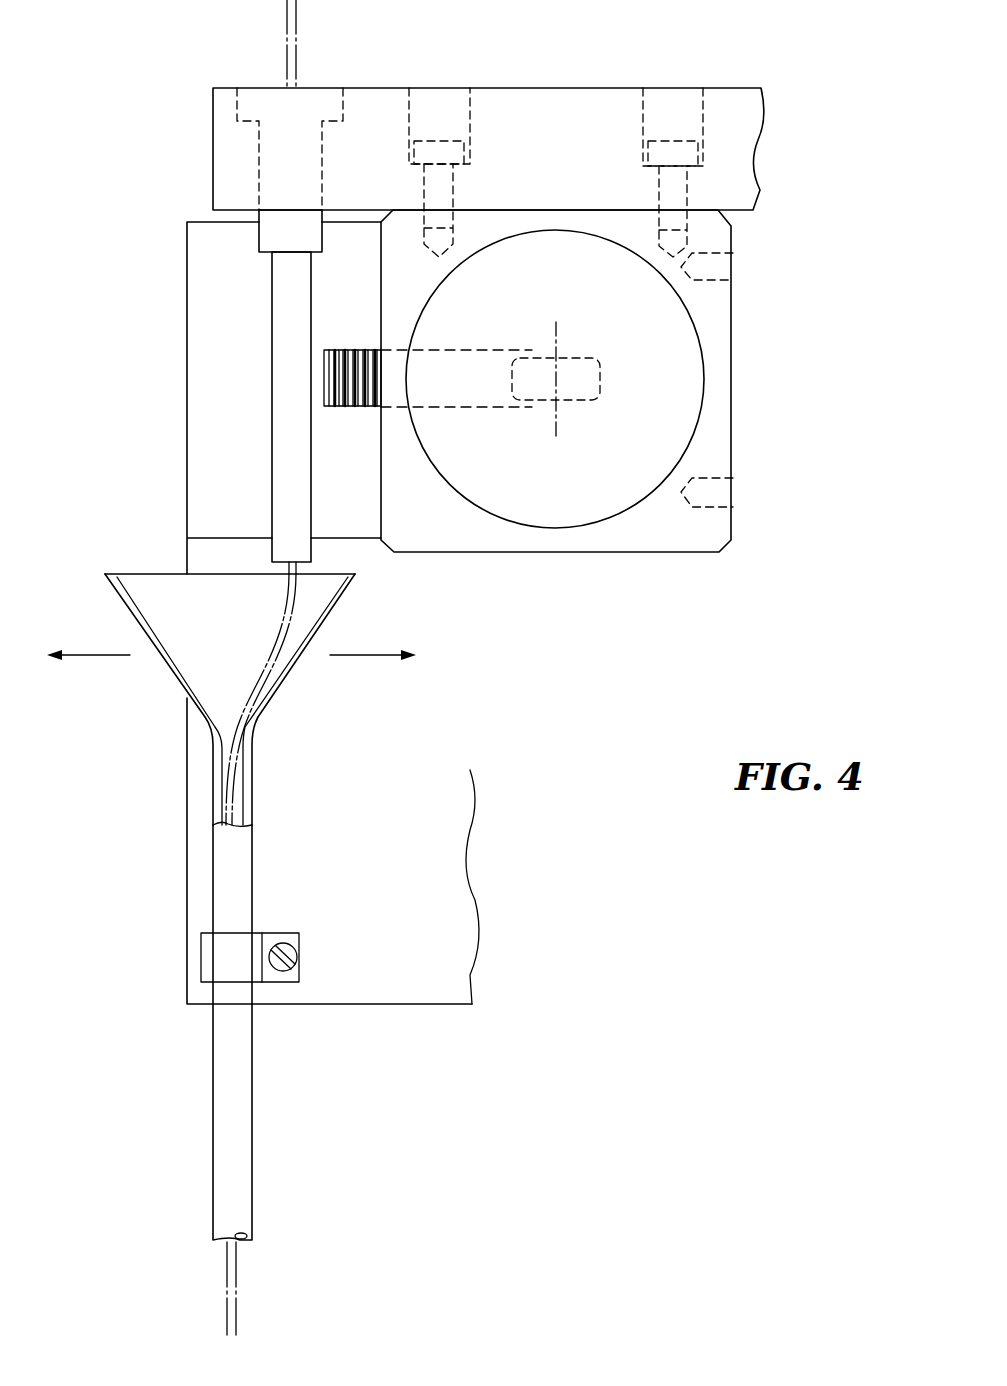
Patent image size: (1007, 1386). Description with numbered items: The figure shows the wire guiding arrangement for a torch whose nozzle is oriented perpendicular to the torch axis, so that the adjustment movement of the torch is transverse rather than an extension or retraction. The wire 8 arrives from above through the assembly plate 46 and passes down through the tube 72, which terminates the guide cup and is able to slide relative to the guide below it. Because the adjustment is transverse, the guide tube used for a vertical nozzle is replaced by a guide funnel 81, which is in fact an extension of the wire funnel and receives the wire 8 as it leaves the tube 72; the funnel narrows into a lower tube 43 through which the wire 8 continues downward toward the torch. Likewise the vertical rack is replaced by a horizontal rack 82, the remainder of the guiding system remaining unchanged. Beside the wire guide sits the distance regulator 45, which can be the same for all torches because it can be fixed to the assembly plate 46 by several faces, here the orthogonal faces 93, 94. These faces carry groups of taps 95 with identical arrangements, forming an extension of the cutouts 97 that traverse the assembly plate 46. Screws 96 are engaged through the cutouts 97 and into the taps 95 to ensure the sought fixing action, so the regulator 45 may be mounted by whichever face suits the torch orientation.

The wire 8 is at (290, 47).
The assembly plate 46 is at (628, 97).
The cutouts 97 is at (700, 107).
The screws 96 is at (440, 148).
The orthogonal face 93 is at (552, 210).
The orthogonal face 94 is at (733, 383).
The taps 95 is at (722, 267).
The distance regulator 45 is at (663, 560).
The tube 72 is at (282, 400).
The horizontal rack 82 is at (343, 397).
The guide funnel 81 is at (108, 572).
The tube 43 is at (222, 1126).